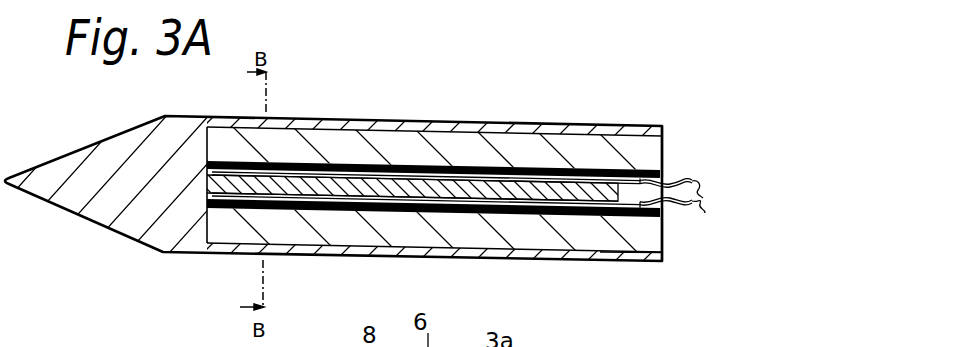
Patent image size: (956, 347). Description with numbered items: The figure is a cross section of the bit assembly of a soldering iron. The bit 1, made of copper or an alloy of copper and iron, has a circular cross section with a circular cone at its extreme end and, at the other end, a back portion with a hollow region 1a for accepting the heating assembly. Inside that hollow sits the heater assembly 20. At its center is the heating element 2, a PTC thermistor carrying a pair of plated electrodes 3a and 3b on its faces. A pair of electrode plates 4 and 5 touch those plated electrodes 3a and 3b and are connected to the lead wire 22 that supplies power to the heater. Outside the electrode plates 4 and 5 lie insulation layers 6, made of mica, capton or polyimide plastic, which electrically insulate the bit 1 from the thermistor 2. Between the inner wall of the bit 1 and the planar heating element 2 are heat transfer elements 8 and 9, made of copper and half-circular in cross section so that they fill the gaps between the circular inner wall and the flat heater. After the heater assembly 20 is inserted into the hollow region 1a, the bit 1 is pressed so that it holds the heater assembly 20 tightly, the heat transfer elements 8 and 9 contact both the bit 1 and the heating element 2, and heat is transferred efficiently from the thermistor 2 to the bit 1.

The bit 1 is at (158, 248).
The hollow region 1a is at (650, 248).
The heating element 2 is at (681, 177).
The plated electrode 3a is at (322, 160).
The plated electrode 3b is at (305, 188).
The electrode plate 4 is at (410, 180).
The electrode plate 5 is at (436, 214).
The insulation layer 6 is at (491, 165).
The heat transfer element 8 is at (657, 148).
The heat transfer element 9 is at (597, 241).
The heater assembly 20 is at (544, 118).
The lead wire 22 is at (678, 218).